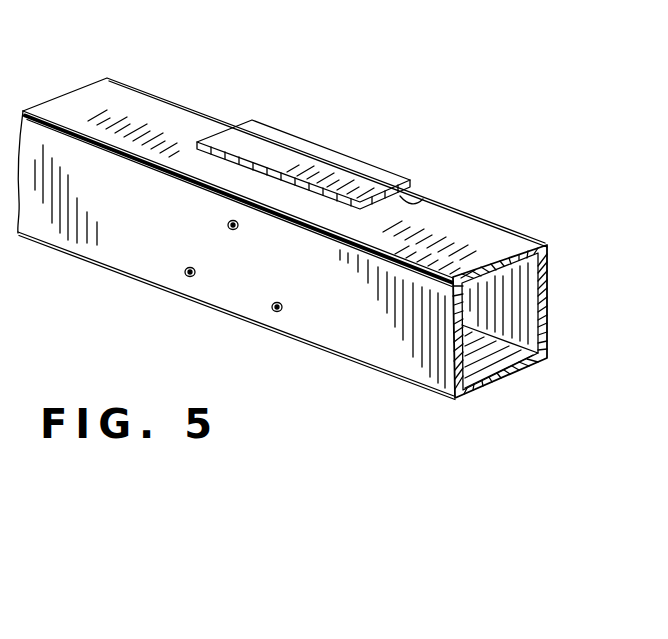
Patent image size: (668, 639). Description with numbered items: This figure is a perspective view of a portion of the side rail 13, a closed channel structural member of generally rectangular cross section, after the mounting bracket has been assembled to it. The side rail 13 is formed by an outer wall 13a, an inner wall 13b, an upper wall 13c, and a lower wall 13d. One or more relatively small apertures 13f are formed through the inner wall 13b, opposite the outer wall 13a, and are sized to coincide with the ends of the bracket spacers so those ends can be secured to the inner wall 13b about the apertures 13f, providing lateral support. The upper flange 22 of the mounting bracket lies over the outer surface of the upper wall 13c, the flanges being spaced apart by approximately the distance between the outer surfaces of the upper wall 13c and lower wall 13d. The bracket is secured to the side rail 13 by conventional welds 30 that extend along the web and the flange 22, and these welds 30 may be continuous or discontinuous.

The side rail 13 is at (128, 107).
The outer wall 13a is at (520, 297).
The inner wall 13b is at (423, 350).
The upper wall 13c is at (487, 230).
The lower wall 13d is at (490, 358).
The apertures 13f is at (232, 231).
The upper flange 22 is at (282, 147).
The welds 30 is at (433, 200).